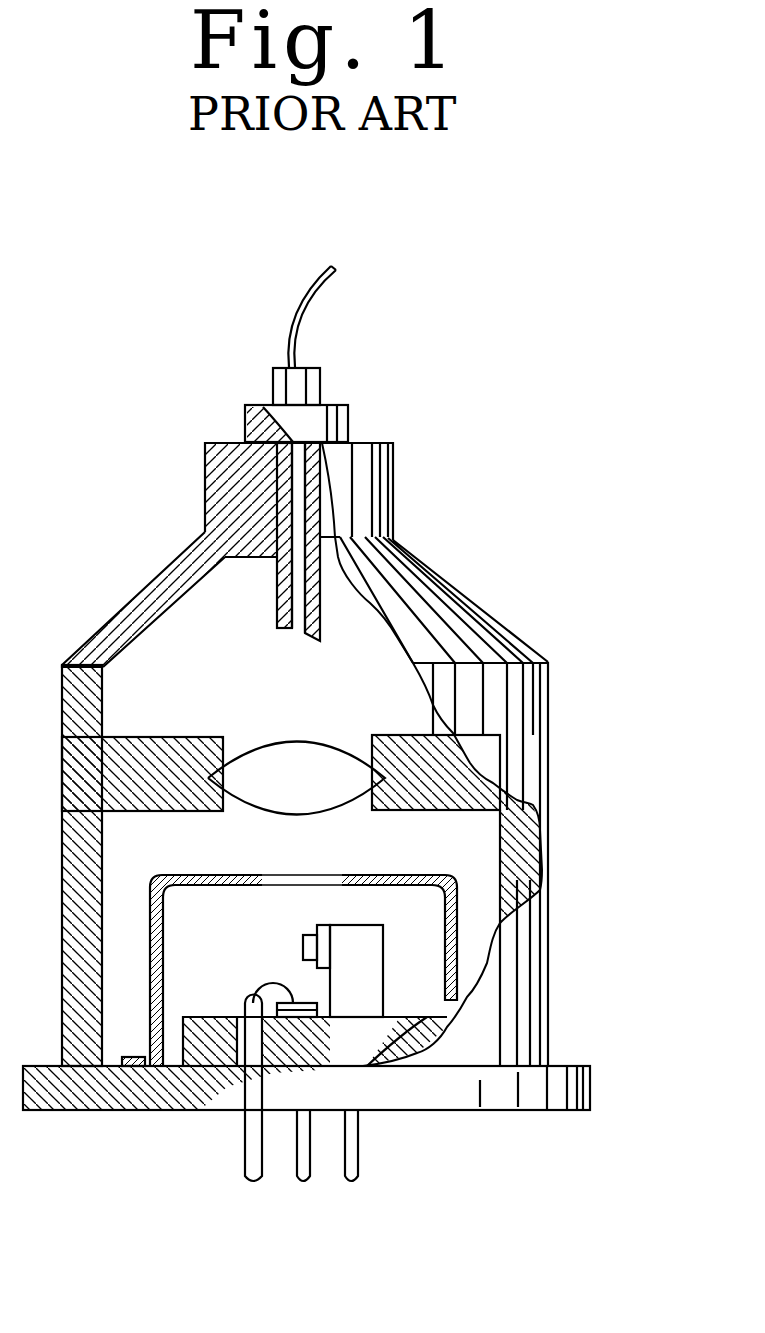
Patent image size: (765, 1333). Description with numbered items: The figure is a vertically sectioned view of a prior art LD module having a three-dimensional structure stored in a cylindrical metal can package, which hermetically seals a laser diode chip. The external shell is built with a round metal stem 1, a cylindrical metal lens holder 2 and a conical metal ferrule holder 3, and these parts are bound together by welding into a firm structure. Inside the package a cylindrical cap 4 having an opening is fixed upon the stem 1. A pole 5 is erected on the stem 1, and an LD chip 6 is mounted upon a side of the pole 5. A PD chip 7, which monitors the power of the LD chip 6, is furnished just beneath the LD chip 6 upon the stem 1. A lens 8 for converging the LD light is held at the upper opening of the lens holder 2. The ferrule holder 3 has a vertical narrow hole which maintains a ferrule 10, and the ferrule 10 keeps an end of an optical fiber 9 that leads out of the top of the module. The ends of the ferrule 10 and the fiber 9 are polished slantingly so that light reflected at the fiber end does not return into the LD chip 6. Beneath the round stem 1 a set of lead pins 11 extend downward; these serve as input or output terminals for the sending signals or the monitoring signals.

The metal stem 1 is at (357, 1040).
The cylindrical metal lens holder 2 is at (507, 1020).
The conical metal ferrule holder 3 is at (498, 691).
The cylindrical cap 4 is at (457, 885).
The pole 5 is at (367, 952).
The LD chip 6 is at (303, 947).
The PD chip 7 is at (297, 987).
The lens 8 is at (335, 780).
The optical fiber 9 is at (299, 630).
The ferrule 10 is at (277, 618).
The lead pins 11 is at (252, 1186).